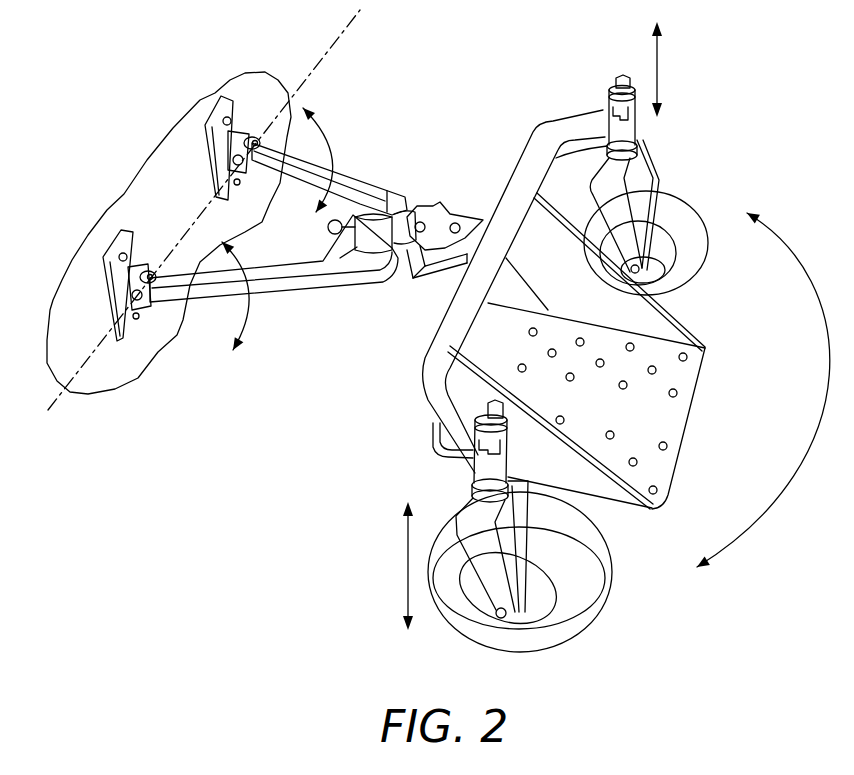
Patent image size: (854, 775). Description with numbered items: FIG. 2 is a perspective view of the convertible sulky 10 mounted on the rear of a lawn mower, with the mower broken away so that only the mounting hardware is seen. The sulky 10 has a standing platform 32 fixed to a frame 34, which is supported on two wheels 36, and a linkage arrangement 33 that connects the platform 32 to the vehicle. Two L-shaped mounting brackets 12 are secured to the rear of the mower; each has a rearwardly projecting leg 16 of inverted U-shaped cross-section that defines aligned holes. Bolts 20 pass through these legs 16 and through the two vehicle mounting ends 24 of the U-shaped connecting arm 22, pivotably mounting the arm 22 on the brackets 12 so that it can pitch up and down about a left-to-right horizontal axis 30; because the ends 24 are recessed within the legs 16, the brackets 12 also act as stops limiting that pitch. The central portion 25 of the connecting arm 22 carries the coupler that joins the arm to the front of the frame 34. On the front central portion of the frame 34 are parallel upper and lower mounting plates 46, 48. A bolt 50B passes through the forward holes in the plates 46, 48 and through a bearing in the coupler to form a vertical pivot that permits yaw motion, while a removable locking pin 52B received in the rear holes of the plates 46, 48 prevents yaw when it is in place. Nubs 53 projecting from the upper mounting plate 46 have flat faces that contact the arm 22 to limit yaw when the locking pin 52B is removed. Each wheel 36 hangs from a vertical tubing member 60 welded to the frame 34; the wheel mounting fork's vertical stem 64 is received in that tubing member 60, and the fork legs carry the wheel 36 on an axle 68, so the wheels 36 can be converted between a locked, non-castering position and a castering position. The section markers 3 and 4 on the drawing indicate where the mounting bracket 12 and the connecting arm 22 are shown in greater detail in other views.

The sulky 10 is at (711, 73).
The mounting bracket 12 is at (236, 100).
The leg 16 is at (236, 106).
The bolt 20 is at (240, 164).
The connecting arm 22 is at (341, 275).
The vehicle mounting end 24 is at (267, 123).
The central portion 25 is at (397, 205).
The horizontal axis 30 is at (63, 398).
The standing platform 32 is at (673, 417).
The linkage arrangement 33 is at (434, 104).
The frame 34 is at (557, 123).
The wheel 36 is at (677, 213).
The upper mounting plate 46 is at (450, 208).
The lower mounting plate 48 is at (445, 282).
The bolt 50B is at (421, 220).
The locking pin 52B is at (462, 226).
The nub 53 is at (440, 205).
The vertical tubing member 60 is at (622, 128).
The vertical stem 64 is at (619, 78).
The axle 68 is at (498, 620).
The section line 3- 3 is at (128, 396).
The section line 4- 4 is at (353, 160).